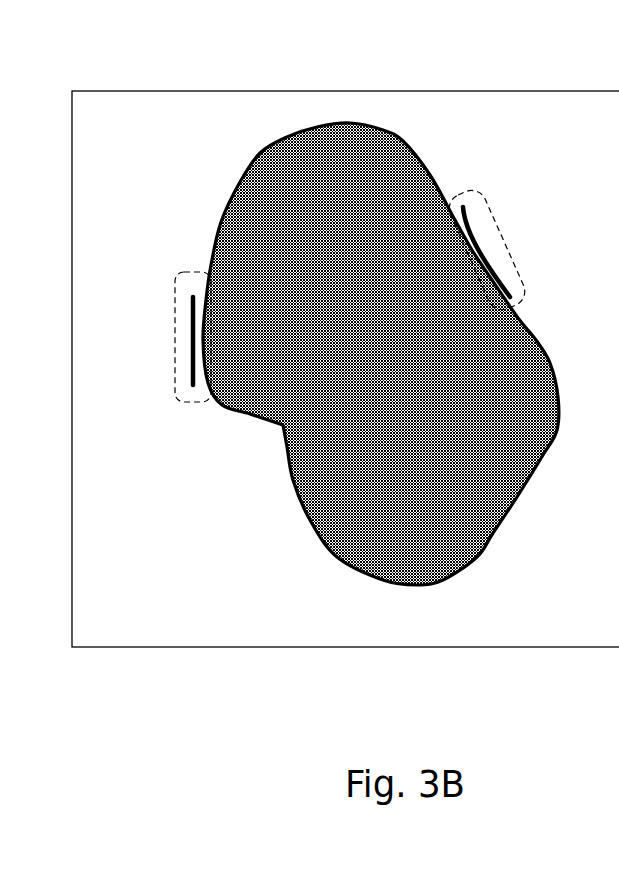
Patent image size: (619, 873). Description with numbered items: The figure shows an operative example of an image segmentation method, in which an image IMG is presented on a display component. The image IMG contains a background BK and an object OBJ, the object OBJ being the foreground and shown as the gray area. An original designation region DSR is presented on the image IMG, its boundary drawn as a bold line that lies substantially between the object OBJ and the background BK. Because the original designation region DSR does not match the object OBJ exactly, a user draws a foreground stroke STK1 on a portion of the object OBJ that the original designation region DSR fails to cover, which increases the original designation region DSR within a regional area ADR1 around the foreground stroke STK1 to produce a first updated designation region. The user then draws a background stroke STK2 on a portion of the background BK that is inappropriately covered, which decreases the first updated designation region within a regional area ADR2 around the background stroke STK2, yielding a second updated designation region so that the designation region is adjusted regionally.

The image IMG is at (148, 62).
The original designation region DSR is at (258, 153).
The object OBJ is at (338, 195).
The background BK is at (473, 130).
The regional area ADR1 is at (175, 278).
The foreground stroke STK1 is at (188, 372).
The regional area ADR2 is at (485, 213).
The background stroke STK2 is at (490, 260).